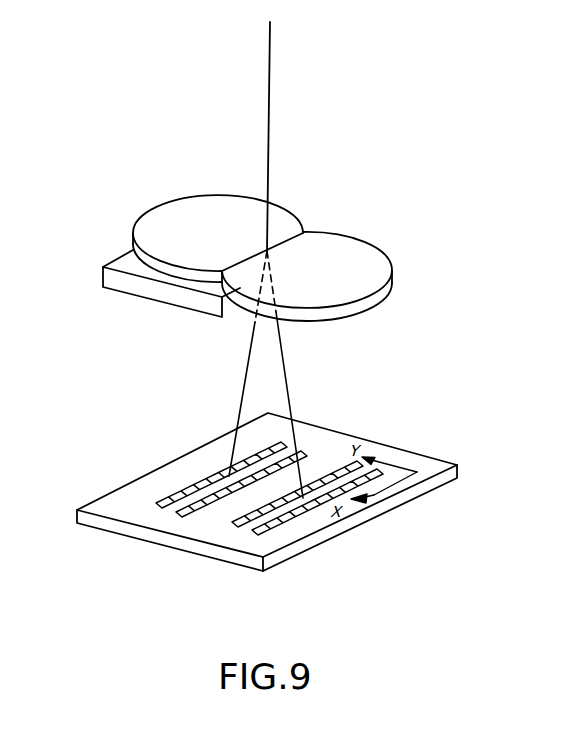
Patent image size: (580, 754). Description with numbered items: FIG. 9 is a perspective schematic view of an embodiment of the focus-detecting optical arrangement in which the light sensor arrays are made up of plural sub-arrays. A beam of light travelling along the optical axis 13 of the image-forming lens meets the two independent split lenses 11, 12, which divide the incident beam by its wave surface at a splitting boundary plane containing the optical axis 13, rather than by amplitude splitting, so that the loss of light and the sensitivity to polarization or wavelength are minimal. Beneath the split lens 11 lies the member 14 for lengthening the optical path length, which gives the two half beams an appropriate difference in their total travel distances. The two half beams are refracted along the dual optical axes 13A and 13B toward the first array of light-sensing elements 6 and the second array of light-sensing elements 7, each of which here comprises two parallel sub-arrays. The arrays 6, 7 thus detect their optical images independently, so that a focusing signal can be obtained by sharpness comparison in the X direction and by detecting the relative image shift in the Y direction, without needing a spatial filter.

The first array of light-sensing elements 6 is at (175, 493).
The second array of light-sensing elements 7 is at (280, 515).
The split lens 11 is at (158, 207).
The split lens 12 is at (373, 243).
The optical axis 13 is at (270, 97).
The optical axis 13A is at (247, 365).
The optical axis 13B is at (288, 380).
The member for lengthening the optical path length 14 is at (103, 280).